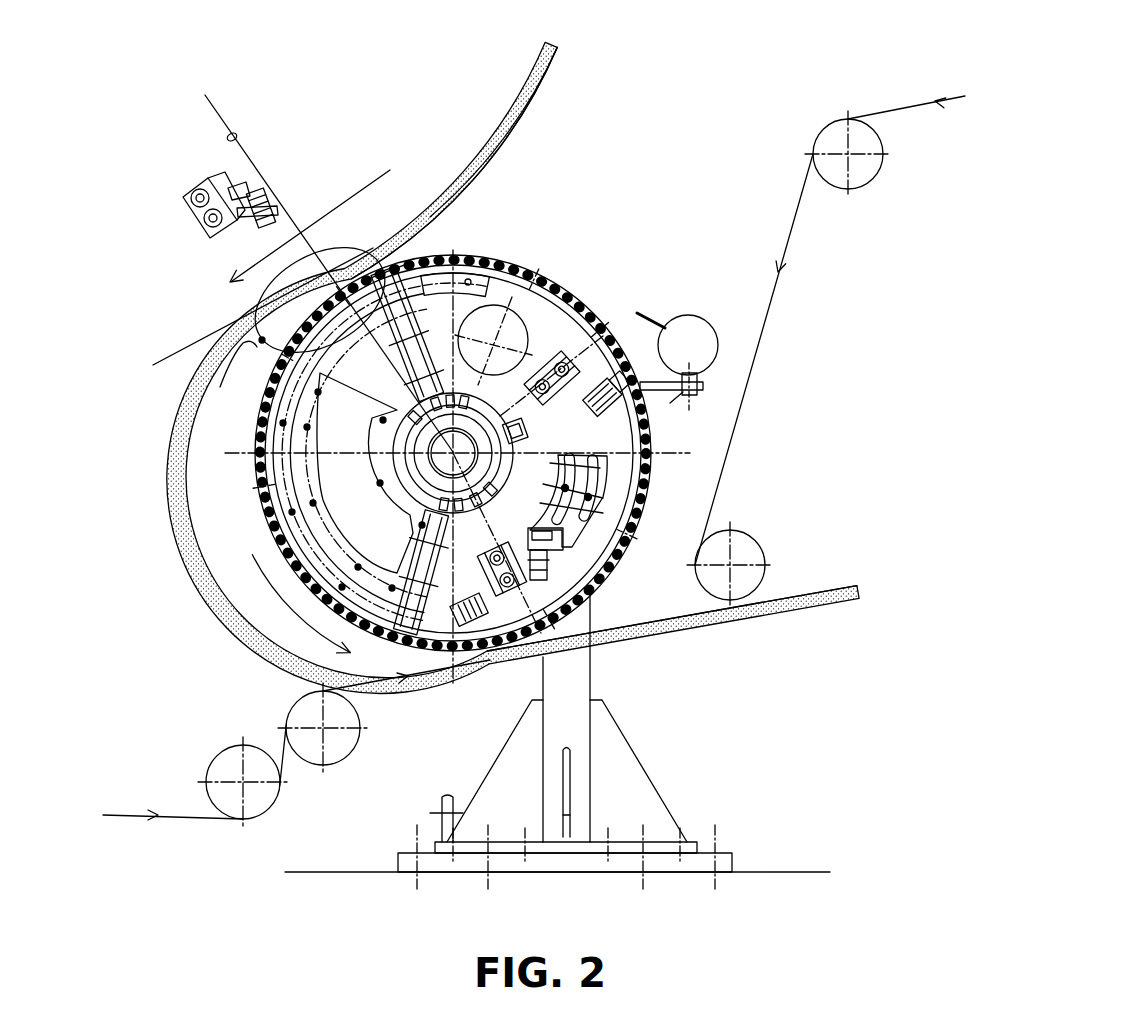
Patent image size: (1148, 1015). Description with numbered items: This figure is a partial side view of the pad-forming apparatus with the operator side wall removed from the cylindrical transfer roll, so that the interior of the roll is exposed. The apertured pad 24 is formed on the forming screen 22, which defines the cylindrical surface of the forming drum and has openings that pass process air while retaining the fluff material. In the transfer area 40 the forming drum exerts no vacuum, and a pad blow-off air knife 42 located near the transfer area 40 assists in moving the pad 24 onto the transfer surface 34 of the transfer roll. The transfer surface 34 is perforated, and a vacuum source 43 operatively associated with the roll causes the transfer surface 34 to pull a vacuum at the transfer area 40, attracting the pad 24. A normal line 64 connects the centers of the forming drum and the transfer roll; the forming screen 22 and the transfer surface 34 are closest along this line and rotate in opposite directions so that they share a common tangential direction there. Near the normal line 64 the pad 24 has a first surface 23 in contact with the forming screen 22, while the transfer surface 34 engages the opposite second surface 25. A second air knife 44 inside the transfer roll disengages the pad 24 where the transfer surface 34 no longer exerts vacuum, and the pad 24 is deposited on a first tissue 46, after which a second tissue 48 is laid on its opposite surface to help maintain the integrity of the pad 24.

The forming screen 22 is at (173, 365).
The first surface 23 is at (497, 127).
The pad 24 is at (483, 150).
The second surface 25 is at (530, 103).
The transfer surface 34 is at (471, 466).
The transfer area 40 is at (252, 340).
The pad blow-off air knife 42 is at (203, 182).
The vacuum source 43 is at (347, 522).
The second air knife 44 is at (495, 643).
The first tissue 46 is at (118, 815).
The second tissue 48 is at (768, 310).
The normal line 64 is at (237, 135).